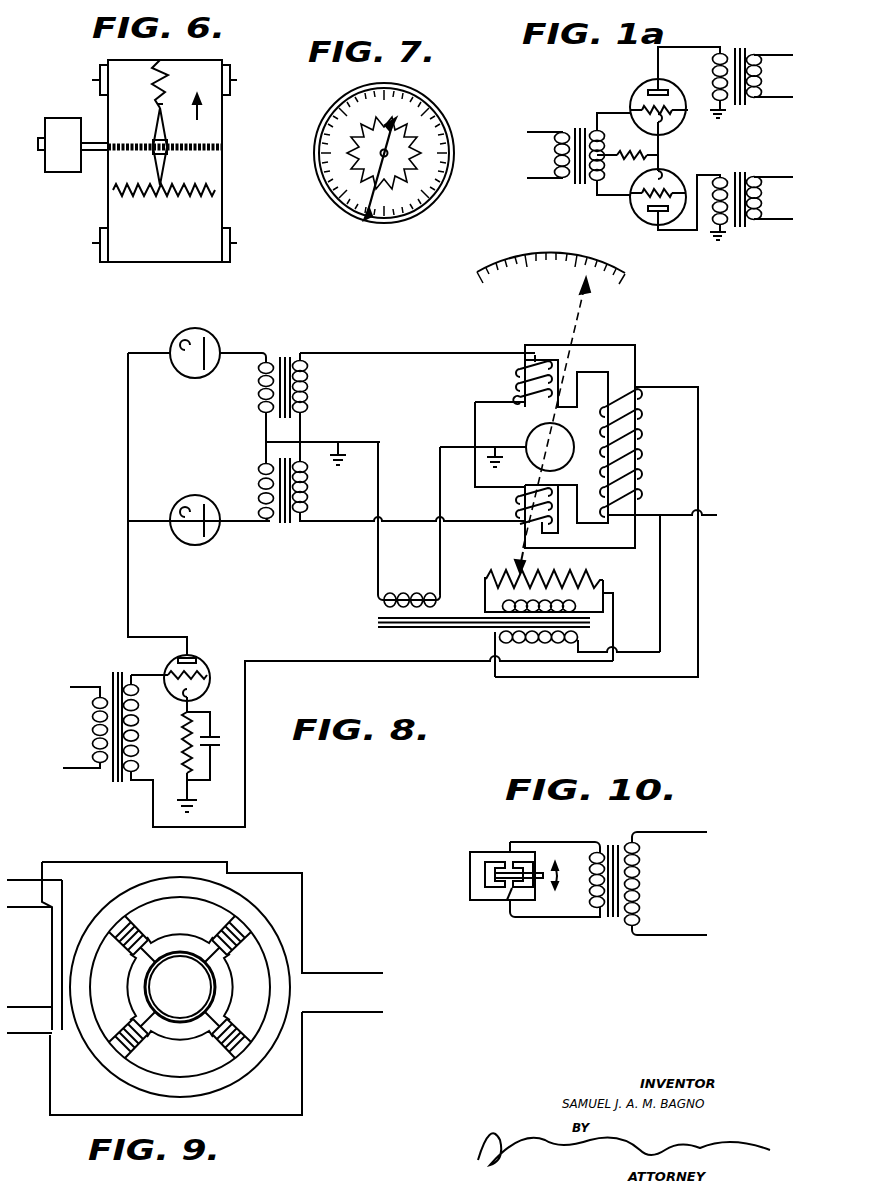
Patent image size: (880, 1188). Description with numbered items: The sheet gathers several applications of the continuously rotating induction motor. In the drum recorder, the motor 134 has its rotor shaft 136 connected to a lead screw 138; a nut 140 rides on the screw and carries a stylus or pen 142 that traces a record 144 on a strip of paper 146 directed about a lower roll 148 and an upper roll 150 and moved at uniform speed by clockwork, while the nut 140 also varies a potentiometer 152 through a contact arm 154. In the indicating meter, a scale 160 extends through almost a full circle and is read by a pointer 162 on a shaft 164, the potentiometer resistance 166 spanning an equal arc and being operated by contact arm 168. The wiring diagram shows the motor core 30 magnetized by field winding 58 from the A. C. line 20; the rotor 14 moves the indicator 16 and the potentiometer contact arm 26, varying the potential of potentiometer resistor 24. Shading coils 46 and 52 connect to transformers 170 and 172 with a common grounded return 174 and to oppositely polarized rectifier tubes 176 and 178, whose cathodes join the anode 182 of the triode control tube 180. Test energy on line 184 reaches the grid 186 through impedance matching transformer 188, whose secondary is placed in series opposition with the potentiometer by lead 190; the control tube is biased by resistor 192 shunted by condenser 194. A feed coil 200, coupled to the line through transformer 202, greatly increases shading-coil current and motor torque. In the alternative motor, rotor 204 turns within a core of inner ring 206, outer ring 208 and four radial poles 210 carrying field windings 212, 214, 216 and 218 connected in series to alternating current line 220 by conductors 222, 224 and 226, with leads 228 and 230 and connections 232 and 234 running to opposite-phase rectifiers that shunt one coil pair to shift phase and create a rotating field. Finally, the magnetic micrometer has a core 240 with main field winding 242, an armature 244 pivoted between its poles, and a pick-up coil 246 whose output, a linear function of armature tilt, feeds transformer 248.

In FIG. 6, the motor 134 is at (62, 170).
In FIG. 6, the rotor shaft 136 is at (100, 153).
In FIG. 6, the lead screw 138 is at (214, 144).
In FIG. 6, the nut 140 is at (166, 146).
In FIG. 6, the stylus or pen 142 is at (159, 108).
In FIG. 6, the record 144 is at (170, 66).
In FIG. 6, the sheet or strip of paper 146 is at (123, 93).
In FIG. 6, the lower roll 148 is at (230, 243).
In FIG. 6, the upper roll 150 is at (220, 106).
In FIG. 6, the potentiometer 152 is at (210, 188).
In FIG. 6, the contact arm 154 is at (166, 170).
In FIG. 7, the scale 160 is at (452, 160).
In FIG. 7, the pointer 162 is at (377, 188).
In FIG. 7, the shaft 164 is at (402, 146).
In FIG. 7, the potentiometer resistance 166 is at (400, 148).
In FIG. 7, the contact arm 168 is at (382, 150).
In FIG. 8, the rotor 14 is at (566, 438).
In FIG. 8, the indicator 16 is at (576, 335).
In FIG. 8, the A. C. line 20 is at (707, 387).
In FIG. 8, the potentiometer resistor 24 is at (594, 580).
In FIG. 8, the potentiometer contact arm 26 is at (523, 556).
In FIG. 8, the core 30 is at (626, 377).
In FIG. 8, the shading coil 46 is at (535, 355).
In FIG. 8, the shading coil 52 is at (522, 509).
In FIG. 8, the field winding 58 is at (642, 410).
In FIG. 8, the transformer 170 is at (289, 352).
In FIG. 8, the transformer 172 is at (292, 523).
In FIG. 8, the common grounded return 174 is at (352, 442).
In FIG. 8, the rectifier tube 176 is at (204, 330).
In FIG. 8, the rectifier tube 178 is at (200, 543).
In FIG. 8, the control tube 180 is at (210, 668).
In FIG. 8, the anode 182 is at (198, 644).
In FIG. 8, the line 184 is at (73, 767).
In FIG. 8, the grid 186 is at (206, 683).
In FIG. 8, the impedance matching transformer 188 is at (118, 670).
In FIG. 8, the lead 190 is at (442, 663).
In FIG. 8, the resistor 192 is at (183, 745).
In FIG. 8, the condenser 194 is at (215, 732).
In FIG. 8, the feed coil 200 is at (412, 592).
In FIG. 8, the transformer 202 is at (588, 628).
In FIG. 9, the rotor 204 is at (204, 1007).
In FIG. 9, the inner ring 206 is at (226, 984).
In FIG. 9, the outer ring 208 is at (268, 950).
In FIG. 9, the radial legs or poles 210 is at (126, 918).
In FIG. 9, the field winding 212 is at (141, 921).
In FIG. 9, the field winding 214 is at (236, 955).
In FIG. 9, the field winding 216 is at (232, 1020).
In FIG. 9, the field winding 218 is at (142, 1050).
In FIG. 9, the alternating current line 220 is at (377, 978).
In FIG. 9, the conductor 222 is at (180, 987).
In FIG. 9, the conductor 224 is at (164, 996).
In FIG. 9, the conductor 226 is at (65, 917).
In FIG. 9, the lead 228 is at (24, 877).
In FIG. 9, the lead 230 is at (23, 909).
In FIG. 9, the connection 232 is at (23, 1005).
In FIG. 9, the connection 234 is at (25, 1036).
In FIG. 10, the core 240 is at (488, 852).
In FIG. 10, the main field winding 242 is at (450, 840).
In FIG. 10, the armature 244 is at (540, 868).
In FIG. 10, the pick-up coil 246 is at (472, 887).
In FIG. 10, the transformer 248 is at (618, 842).